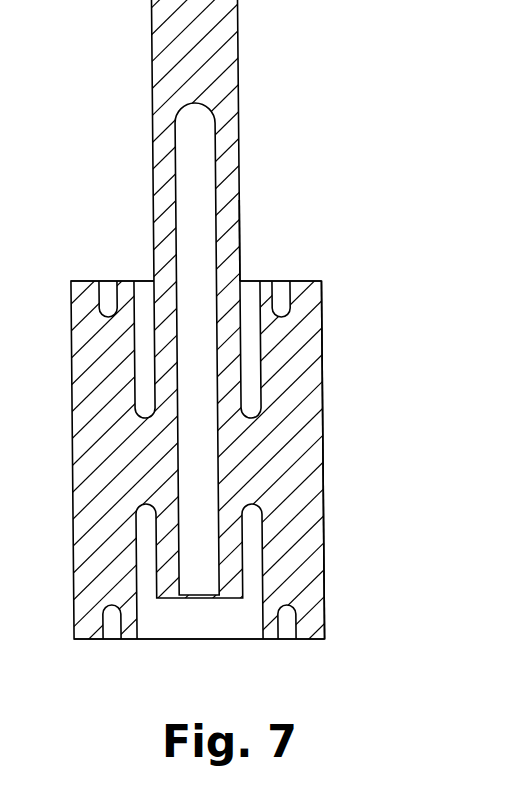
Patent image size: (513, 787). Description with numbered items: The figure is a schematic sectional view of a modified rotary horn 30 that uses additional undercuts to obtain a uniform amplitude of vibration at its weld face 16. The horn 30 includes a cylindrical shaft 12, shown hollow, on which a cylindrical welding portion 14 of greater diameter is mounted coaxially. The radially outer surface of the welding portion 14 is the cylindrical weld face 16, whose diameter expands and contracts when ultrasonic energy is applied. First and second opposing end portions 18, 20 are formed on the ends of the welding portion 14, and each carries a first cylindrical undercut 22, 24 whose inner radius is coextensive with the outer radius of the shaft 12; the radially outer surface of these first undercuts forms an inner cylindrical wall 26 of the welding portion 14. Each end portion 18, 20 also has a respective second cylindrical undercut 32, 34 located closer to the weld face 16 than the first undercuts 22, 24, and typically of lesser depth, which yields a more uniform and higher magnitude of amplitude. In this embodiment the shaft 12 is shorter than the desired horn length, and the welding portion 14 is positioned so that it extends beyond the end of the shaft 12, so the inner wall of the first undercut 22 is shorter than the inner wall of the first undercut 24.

The cylindrical shaft 12 is at (226, 54).
The cylindrical welding portion 14 is at (290, 422).
The weld face 16 is at (325, 500).
The first end portion 18 is at (316, 641).
The second end portion 20 is at (300, 280).
The first cylindrical undercut 22 is at (261, 585).
The first cylindrical undercut 24 is at (241, 287).
The inner cylindrical wall 26 is at (260, 347).
The rotary horn 30 is at (297, 153).
The second cylindrical undercut 32 is at (279, 625).
The second cylindrical undercut 34 is at (280, 311).